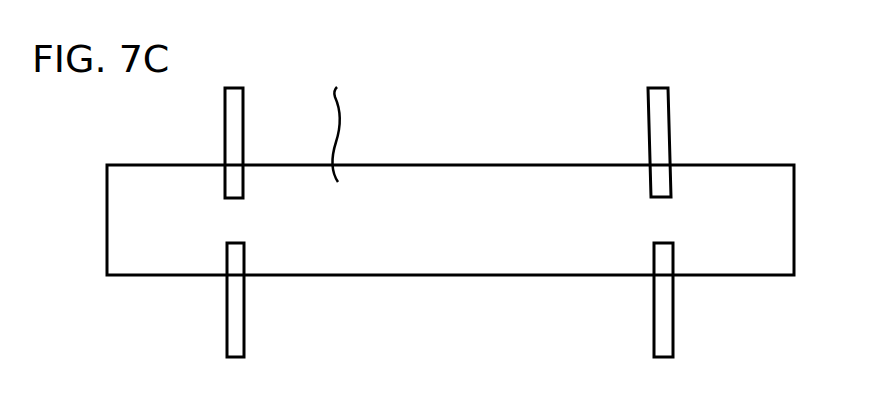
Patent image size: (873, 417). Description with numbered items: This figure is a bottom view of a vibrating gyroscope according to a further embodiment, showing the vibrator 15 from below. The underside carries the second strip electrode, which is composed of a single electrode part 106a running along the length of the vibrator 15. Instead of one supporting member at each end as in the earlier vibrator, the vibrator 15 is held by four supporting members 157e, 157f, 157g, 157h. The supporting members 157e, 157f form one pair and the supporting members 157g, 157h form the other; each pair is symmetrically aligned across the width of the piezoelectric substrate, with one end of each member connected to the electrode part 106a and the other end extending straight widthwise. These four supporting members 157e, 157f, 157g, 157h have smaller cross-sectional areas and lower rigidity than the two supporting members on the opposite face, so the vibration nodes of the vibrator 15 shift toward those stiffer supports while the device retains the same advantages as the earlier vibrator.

The vibrator 15 is at (136, 144).
The electrode part 106a is at (329, 0).
The supporting member 157e is at (228, 90).
The supporting member 157f is at (235, 352).
The supporting member 157g is at (658, 88).
The supporting member 157h is at (662, 352).